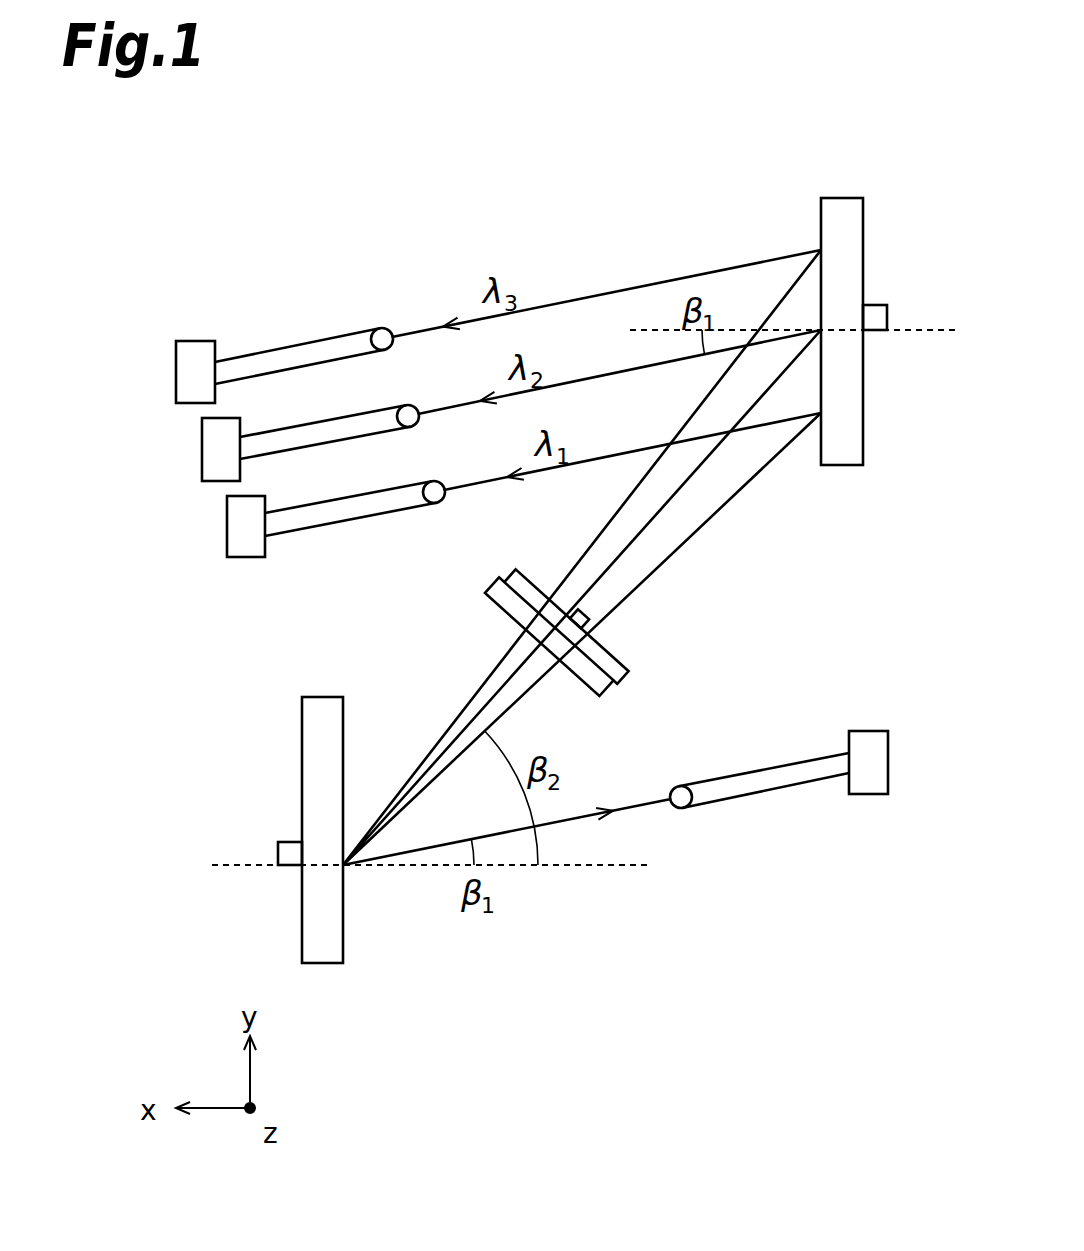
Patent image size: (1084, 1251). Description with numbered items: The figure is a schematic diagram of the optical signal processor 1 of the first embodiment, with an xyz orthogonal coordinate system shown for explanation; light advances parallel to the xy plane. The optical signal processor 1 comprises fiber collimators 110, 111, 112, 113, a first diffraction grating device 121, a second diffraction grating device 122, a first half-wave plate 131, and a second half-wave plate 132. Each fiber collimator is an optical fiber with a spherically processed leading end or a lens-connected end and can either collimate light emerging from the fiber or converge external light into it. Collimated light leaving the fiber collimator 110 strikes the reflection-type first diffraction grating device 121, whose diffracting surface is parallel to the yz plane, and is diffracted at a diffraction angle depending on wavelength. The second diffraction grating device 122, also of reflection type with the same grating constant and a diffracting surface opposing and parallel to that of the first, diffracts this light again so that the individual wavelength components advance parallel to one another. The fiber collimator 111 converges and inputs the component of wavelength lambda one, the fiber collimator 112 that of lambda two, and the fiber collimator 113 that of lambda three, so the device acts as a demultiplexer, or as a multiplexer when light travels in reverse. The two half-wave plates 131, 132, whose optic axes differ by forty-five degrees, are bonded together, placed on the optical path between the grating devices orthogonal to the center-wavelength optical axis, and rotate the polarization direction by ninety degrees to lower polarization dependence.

The optical signal processor 1 is at (575, 228).
The fiber collimator 110 is at (773, 762).
The fiber collimator 111 is at (303, 533).
The fiber collimator 112 is at (277, 453).
The fiber collimator 113 is at (260, 377).
The first diffraction grating device 121 is at (343, 930).
The second diffraction grating device 122 is at (818, 213).
The first half-wave plate 131 is at (498, 607).
The second half-wave plate 132 is at (617, 655).